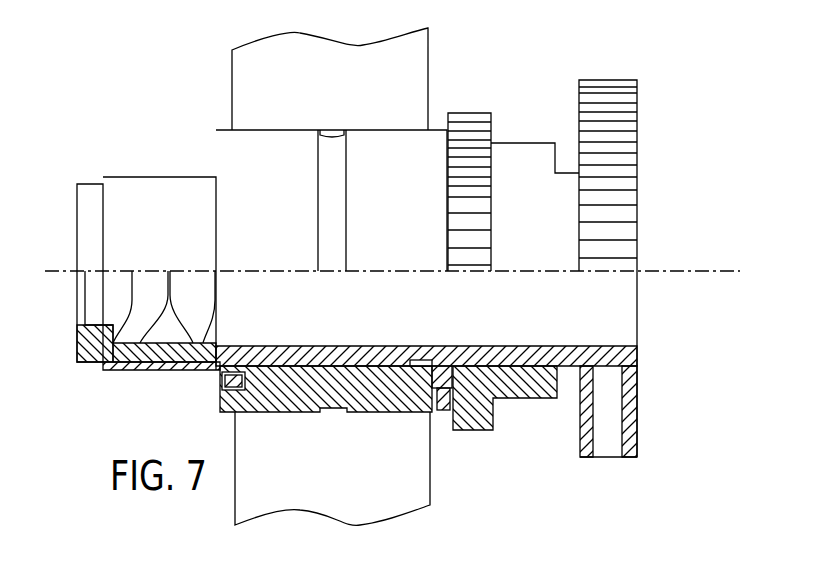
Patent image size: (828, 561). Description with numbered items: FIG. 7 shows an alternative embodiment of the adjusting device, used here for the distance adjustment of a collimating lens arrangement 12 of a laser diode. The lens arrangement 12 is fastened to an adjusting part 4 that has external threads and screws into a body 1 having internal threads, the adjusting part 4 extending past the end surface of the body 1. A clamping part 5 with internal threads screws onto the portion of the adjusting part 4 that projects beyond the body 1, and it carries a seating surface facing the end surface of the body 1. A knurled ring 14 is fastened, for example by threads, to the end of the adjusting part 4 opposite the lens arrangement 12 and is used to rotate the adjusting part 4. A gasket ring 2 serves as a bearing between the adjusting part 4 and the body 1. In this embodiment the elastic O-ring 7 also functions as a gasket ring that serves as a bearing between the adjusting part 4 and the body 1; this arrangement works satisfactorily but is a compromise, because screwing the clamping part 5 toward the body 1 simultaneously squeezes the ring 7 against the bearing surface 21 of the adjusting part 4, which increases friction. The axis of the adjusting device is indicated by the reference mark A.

The body 1 is at (222, 130).
The gasket ring 2 is at (222, 394).
The adjusting part 4 is at (158, 177).
The clamping part 5 is at (518, 143).
The elastic O-ring 7 is at (441, 412).
The collimating lens arrangement 12 is at (82, 184).
The knurled ring 14 is at (608, 80).
The bearing surface 21 is at (424, 362).
The axis A is at (658, 271).